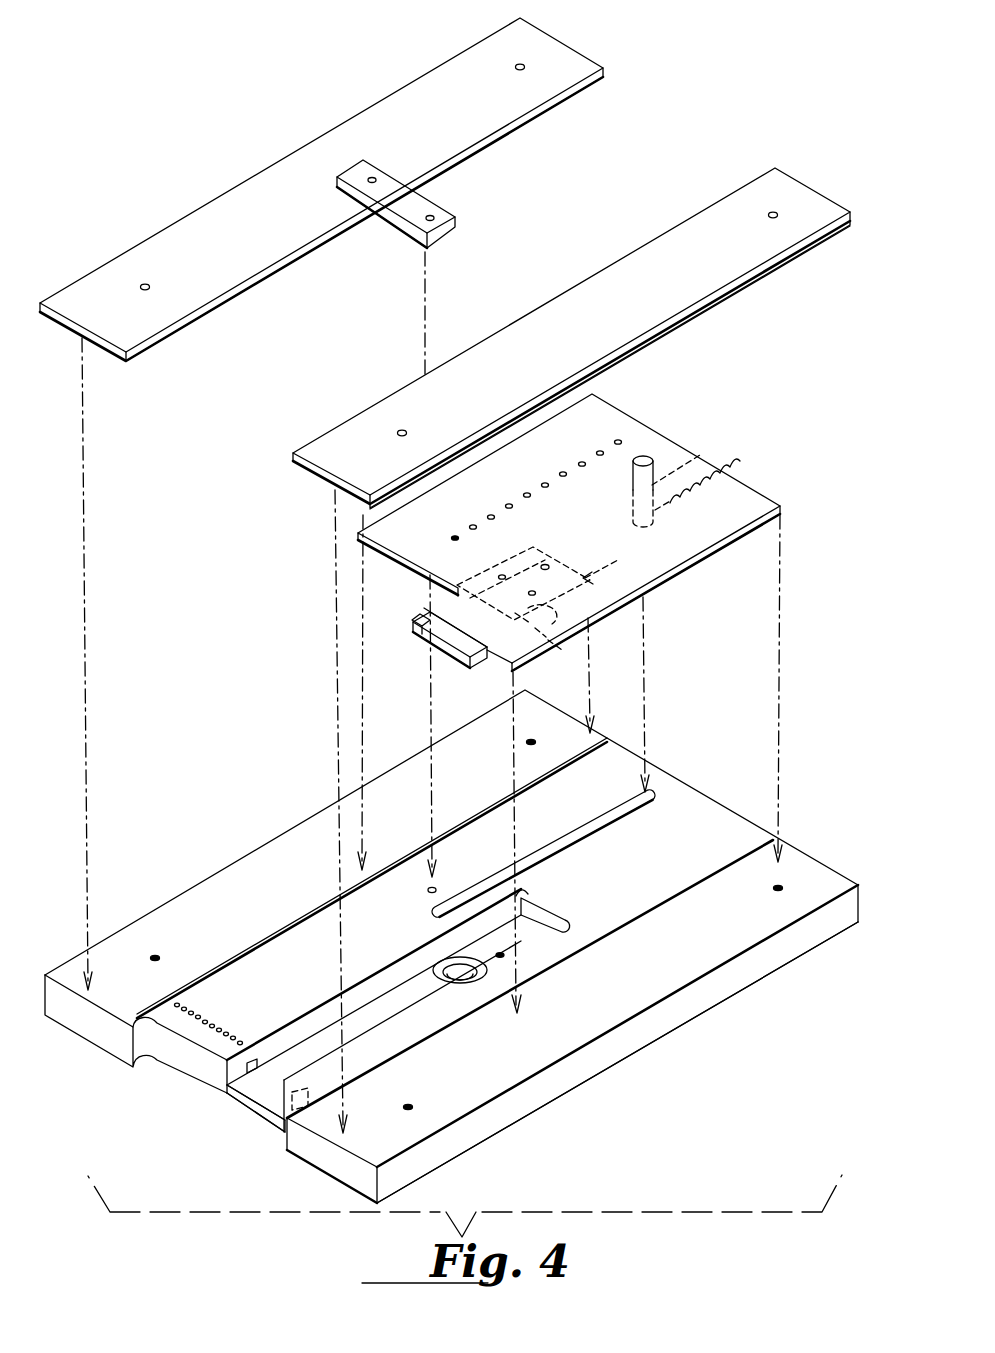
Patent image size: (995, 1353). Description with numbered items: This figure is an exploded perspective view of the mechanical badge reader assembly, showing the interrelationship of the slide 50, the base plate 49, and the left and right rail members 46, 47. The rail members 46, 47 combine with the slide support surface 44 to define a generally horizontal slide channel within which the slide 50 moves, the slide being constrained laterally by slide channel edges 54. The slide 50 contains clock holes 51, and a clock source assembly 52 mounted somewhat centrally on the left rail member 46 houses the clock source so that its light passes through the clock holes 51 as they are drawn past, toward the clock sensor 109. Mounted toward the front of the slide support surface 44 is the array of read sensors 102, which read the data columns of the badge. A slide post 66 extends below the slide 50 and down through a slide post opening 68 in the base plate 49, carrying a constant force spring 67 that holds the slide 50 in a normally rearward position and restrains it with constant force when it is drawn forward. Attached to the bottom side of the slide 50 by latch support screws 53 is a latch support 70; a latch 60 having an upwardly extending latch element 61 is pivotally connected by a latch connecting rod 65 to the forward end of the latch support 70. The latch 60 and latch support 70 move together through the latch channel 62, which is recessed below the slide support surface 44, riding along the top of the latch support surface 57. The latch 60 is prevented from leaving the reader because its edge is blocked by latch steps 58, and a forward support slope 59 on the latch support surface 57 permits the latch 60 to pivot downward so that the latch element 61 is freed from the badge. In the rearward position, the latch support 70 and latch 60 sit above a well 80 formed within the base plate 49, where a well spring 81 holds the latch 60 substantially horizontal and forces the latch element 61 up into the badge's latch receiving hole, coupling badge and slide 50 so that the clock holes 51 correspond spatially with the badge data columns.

The slide support surface 44 is at (710, 834).
The left rail member 46 is at (258, 188).
The right rail member 47 is at (716, 274).
The base plate 49 is at (665, 1022).
The slide 50 is at (694, 548).
The clock holes 51 is at (545, 481).
The clock source assembly 52 is at (418, 205).
The latch support screws 53 is at (548, 564).
The slide channel edges 54 is at (609, 739).
The latch support surface 57 is at (337, 1040).
The latch steps 58 is at (254, 1060).
The forward support slope 59 is at (265, 1086).
The latch 60 is at (489, 662).
The latch element 61 is at (414, 623).
The latch channel 62 is at (430, 1006).
The latch connecting rod 65 is at (549, 655).
The slide post 66 is at (708, 445).
The constant force spring 67 is at (748, 468).
The slide post opening 68 is at (612, 818).
The latch support 70 is at (615, 562).
The well 80 is at (534, 930).
The well spring 81 is at (467, 979).
The read sensors 102 is at (246, 1038).
The clock sensor 109 is at (440, 884).